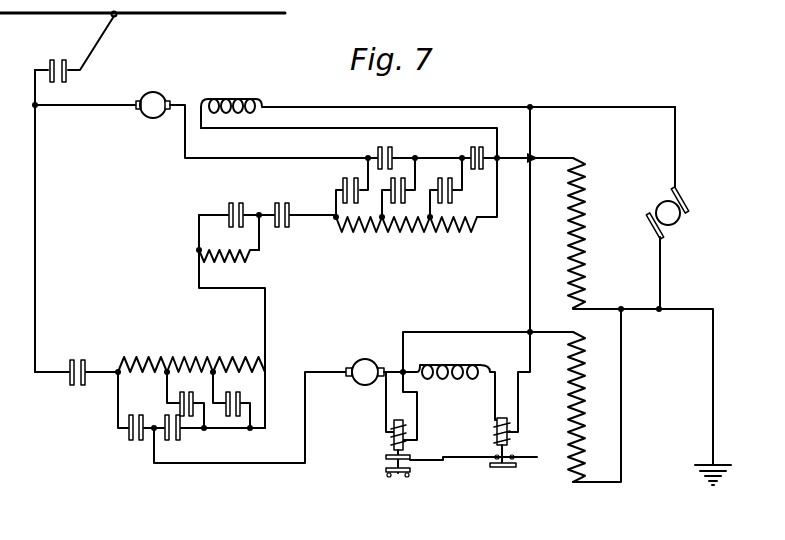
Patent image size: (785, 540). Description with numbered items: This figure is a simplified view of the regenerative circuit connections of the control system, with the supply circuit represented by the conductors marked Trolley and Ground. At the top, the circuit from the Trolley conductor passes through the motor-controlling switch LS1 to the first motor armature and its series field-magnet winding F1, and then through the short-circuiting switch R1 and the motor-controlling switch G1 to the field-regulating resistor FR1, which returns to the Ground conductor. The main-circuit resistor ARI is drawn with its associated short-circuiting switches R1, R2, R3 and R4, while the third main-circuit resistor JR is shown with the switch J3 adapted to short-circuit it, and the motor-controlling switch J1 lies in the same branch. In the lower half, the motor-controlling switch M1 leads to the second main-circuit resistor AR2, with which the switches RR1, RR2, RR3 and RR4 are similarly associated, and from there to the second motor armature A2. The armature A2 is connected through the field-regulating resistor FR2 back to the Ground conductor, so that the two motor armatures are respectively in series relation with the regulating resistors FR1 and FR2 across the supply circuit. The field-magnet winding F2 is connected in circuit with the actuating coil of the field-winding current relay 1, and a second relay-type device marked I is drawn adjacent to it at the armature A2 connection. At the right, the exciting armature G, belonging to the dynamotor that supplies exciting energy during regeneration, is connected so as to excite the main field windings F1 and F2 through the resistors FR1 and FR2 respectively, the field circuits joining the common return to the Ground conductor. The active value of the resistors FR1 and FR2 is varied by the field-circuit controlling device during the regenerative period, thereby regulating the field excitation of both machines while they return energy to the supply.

The supply-circuit conductor Trolley is at (142, 29).
The motor-controlling switch LS1 is at (76, 57).
The field-magnet winding F1 is at (438, 146).
The exciting armature G is at (664, 208).
The short-circuiting switch R1 is at (417, 148).
The short-circuiting switch R2 is at (446, 187).
The short-circuiting switch R3 is at (398, 187).
The short-circuiting switch R4 is at (350, 187).
The motor-controlling switch G1 is at (518, 169).
The main-circuit resistor ARI is at (405, 234).
The field-regulating resistor FR1 is at (560, 233).
The switch J3 is at (236, 205).
The motor-controlling switch J1 is at (304, 205).
The main-circuit resistor JR is at (230, 321).
The motor-controlling switch M1 is at (76, 362).
The main-circuit resistor AR2 is at (190, 353).
The switch RR1 is at (141, 406).
The switch RR2 is at (233, 400).
The switch RR3 is at (185, 400).
The switch RR4 is at (215, 437).
The armature A2 is at (376, 384).
The field-magnet winding F2 is at (450, 392).
The field-regulating resistor FR2 is at (574, 395).
The contactor I is at (389, 424).
The field-winding current relay 1 is at (473, 442).
The supply-circuit conductor Ground is at (705, 491).